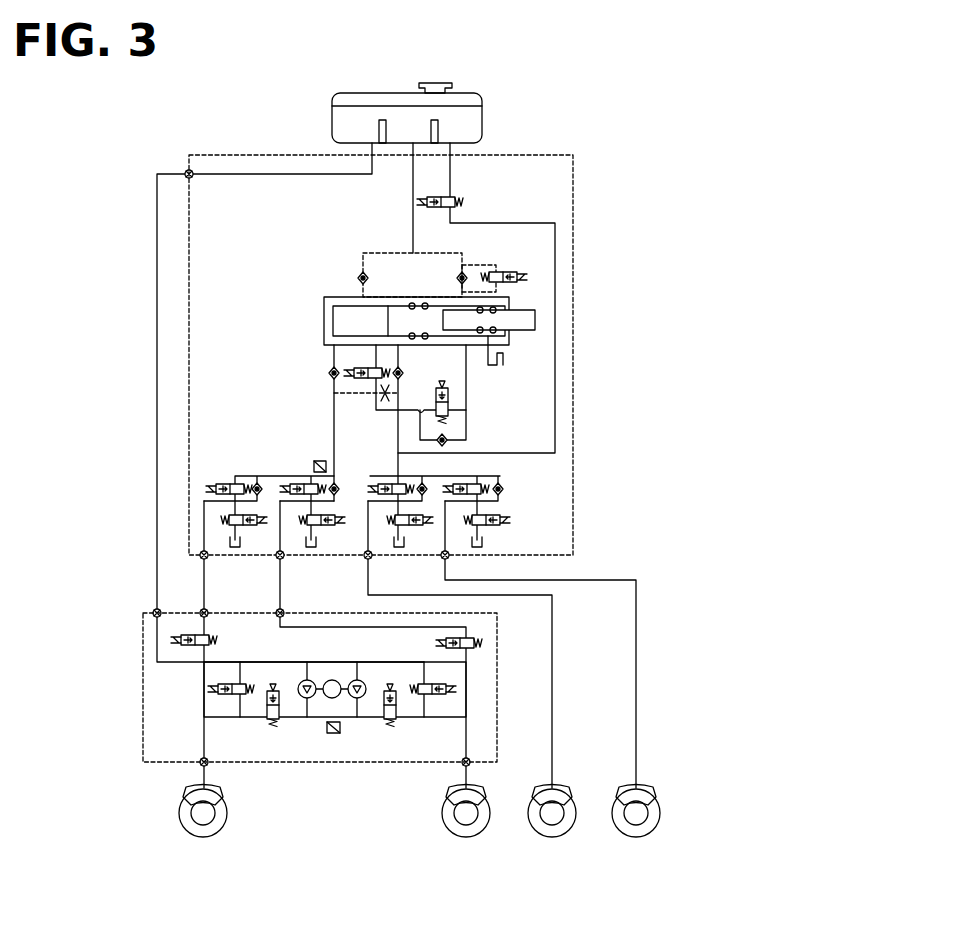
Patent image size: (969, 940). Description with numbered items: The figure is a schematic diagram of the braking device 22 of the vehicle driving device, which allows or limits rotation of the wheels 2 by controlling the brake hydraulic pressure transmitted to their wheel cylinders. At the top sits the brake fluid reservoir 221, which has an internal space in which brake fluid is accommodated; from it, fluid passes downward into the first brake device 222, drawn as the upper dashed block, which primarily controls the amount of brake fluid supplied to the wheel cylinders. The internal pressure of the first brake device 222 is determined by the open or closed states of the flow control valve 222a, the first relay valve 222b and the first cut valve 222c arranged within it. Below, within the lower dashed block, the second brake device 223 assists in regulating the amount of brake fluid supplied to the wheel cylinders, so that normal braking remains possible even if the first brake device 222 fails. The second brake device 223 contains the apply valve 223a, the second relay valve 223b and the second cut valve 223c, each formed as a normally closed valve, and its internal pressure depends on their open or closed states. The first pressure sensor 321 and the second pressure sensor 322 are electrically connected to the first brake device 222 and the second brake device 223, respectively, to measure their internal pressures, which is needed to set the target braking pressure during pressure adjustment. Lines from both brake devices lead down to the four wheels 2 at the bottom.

The braking device 22 is at (427, 37).
The brake fluid reservoir 221 is at (482, 115).
The first brake device 222 is at (188, 319).
The flow control valve 222a is at (524, 277).
The first relay valve 222b is at (356, 381).
The first cut valve 222c is at (462, 200).
The second brake device 223 is at (142, 637).
The apply valve 223a is at (273, 727).
The second relay valve 223b is at (222, 695).
The second cut valve 223c is at (190, 648).
The first pressure sensor 321 is at (314, 464).
The second pressure sensor 322 is at (334, 733).
The wheels 2 is at (203, 838).